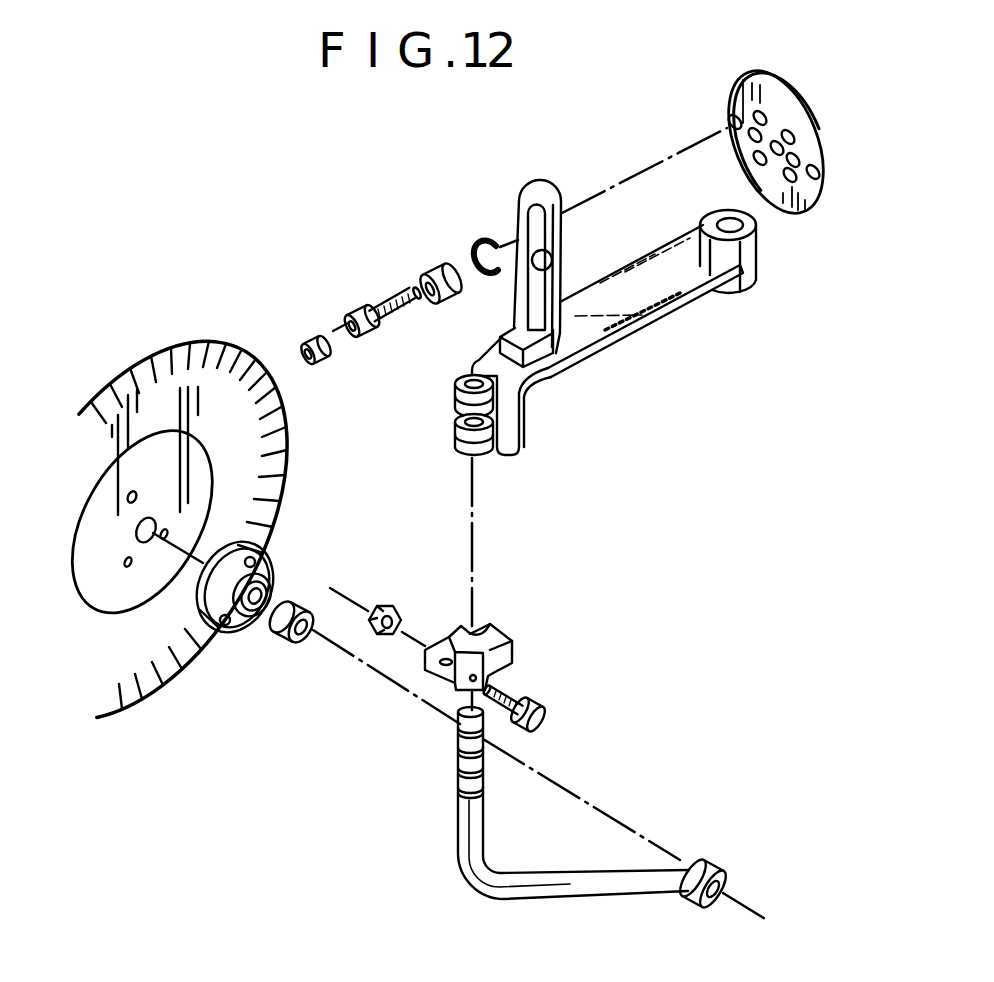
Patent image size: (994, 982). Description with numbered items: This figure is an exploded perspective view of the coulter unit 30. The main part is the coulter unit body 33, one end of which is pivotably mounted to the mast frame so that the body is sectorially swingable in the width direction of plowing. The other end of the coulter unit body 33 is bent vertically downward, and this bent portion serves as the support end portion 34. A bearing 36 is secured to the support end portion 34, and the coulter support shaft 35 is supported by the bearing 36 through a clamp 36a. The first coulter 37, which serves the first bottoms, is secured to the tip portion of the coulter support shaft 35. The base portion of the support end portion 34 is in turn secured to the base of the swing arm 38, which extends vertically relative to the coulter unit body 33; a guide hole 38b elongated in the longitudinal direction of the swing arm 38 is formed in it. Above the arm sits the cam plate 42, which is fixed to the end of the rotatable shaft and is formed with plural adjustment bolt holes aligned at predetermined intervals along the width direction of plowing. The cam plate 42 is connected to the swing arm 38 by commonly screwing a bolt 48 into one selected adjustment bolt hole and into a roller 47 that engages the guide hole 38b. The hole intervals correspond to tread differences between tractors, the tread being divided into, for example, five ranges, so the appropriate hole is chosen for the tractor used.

The coulter unit 30 is at (517, 453).
The coulter unit body 33 is at (613, 337).
The support end portion 34 is at (517, 413).
The coulter support shaft 35 is at (463, 827).
The bearing 36 is at (455, 437).
The clamp 36a is at (515, 658).
The first coulter 37 is at (193, 663).
The swing arm 38 is at (548, 188).
The guide hole 38b is at (553, 270).
The cam plate 42 is at (757, 78).
The roller 47 is at (437, 263).
The bolt 48 is at (362, 312).